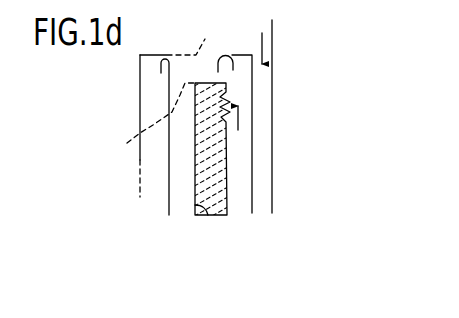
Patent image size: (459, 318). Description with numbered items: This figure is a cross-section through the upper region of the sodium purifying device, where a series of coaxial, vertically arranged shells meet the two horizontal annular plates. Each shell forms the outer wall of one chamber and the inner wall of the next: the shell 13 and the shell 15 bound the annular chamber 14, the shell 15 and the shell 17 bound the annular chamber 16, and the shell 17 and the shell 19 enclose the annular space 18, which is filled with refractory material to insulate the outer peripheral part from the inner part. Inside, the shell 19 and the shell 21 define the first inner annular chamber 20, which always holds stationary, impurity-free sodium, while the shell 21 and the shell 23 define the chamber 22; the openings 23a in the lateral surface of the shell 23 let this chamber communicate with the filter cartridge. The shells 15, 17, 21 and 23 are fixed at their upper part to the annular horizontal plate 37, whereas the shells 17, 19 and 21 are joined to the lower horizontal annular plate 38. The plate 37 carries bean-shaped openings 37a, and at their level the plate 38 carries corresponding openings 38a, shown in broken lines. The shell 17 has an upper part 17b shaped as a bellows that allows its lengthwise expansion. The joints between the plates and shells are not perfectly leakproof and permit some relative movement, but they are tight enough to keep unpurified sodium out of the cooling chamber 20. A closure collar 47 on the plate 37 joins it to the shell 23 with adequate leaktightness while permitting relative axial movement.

The shell 13 is at (272, 33).
The annular chamber 14 is at (263, 78).
The shell 15 is at (253, 133).
The annular chamber 16 is at (238, 168).
The shell 17 is at (229, 198).
The upper part forming a bellows 17b is at (226, 96).
The annular space 18 is at (226, 200).
The shell 19 is at (200, 212).
The annular chamber 20 is at (187, 195).
The shell 21 is at (168, 205).
The annular chamber 22 is at (147, 203).
The shell 23 is at (140, 164).
The openings 23a is at (138, 198).
The annular horizontal plate 37 is at (153, 55).
The bean-shaped openings 37a is at (225, 28).
The horizontal annular plate 38 is at (205, 83).
The openings 38a is at (146, 120).
The closure collar 47 is at (141, 80).